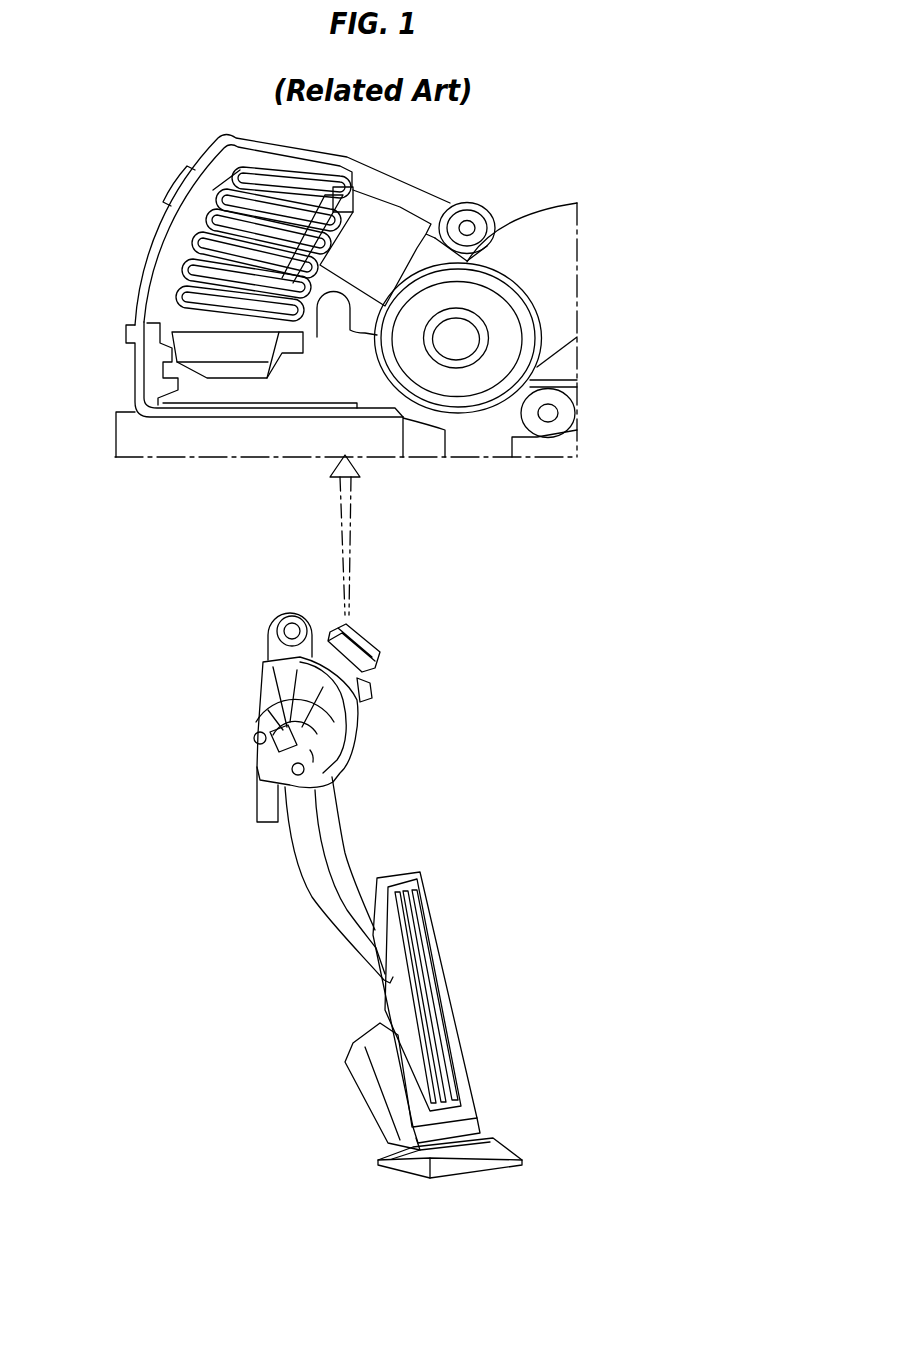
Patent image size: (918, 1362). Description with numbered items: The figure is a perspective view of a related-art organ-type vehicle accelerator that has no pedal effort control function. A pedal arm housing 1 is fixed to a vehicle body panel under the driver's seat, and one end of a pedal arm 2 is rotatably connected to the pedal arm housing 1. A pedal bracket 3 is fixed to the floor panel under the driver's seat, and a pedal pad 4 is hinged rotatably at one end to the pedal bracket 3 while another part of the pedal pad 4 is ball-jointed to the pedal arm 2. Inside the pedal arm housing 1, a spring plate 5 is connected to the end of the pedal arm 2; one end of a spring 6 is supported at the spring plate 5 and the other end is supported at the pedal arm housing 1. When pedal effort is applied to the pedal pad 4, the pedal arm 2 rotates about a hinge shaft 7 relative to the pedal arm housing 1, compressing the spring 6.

The pedal arm housing 1 is at (175, 192).
The pedal arm 2 is at (558, 288).
The pedal bracket 3 is at (367, 1085).
The pedal pad 4 is at (437, 1010).
The spring plate 5 is at (226, 350).
The spring 6 is at (193, 277).
The hinge shaft 7 is at (457, 338).